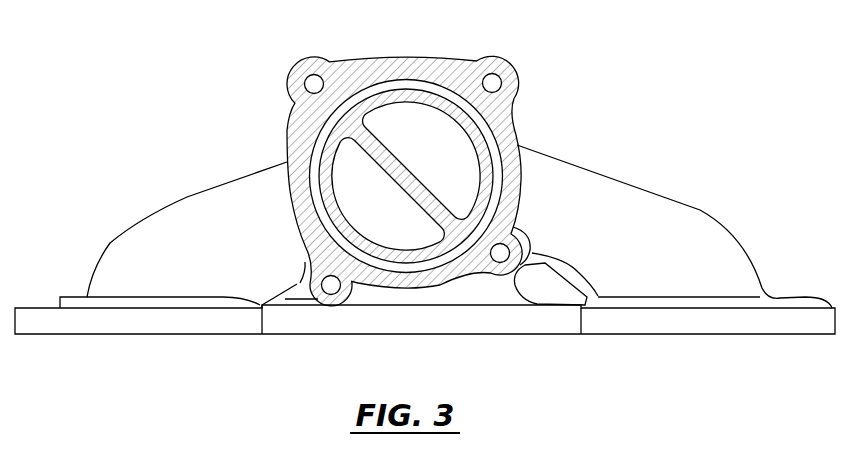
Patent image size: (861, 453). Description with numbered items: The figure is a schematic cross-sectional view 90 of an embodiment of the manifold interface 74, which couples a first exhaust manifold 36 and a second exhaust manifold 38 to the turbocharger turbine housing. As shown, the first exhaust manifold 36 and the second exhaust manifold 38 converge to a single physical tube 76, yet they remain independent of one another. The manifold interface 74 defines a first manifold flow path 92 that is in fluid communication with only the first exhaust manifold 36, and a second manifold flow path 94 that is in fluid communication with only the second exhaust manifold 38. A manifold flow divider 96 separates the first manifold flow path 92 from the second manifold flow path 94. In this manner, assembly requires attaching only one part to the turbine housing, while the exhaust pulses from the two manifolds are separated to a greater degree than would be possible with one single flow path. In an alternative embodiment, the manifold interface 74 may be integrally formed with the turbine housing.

The cross-sectional view 90 is at (84, 86).
The first exhaust manifold 36 is at (190, 197).
The second exhaust manifold 38 is at (650, 187).
The manifold interface 74 is at (515, 70).
The single physical tube 76 is at (525, 143).
The first manifold flow path 92 is at (357, 198).
The second manifold flow path 94 is at (421, 157).
The manifold flow divider 96 is at (407, 190).